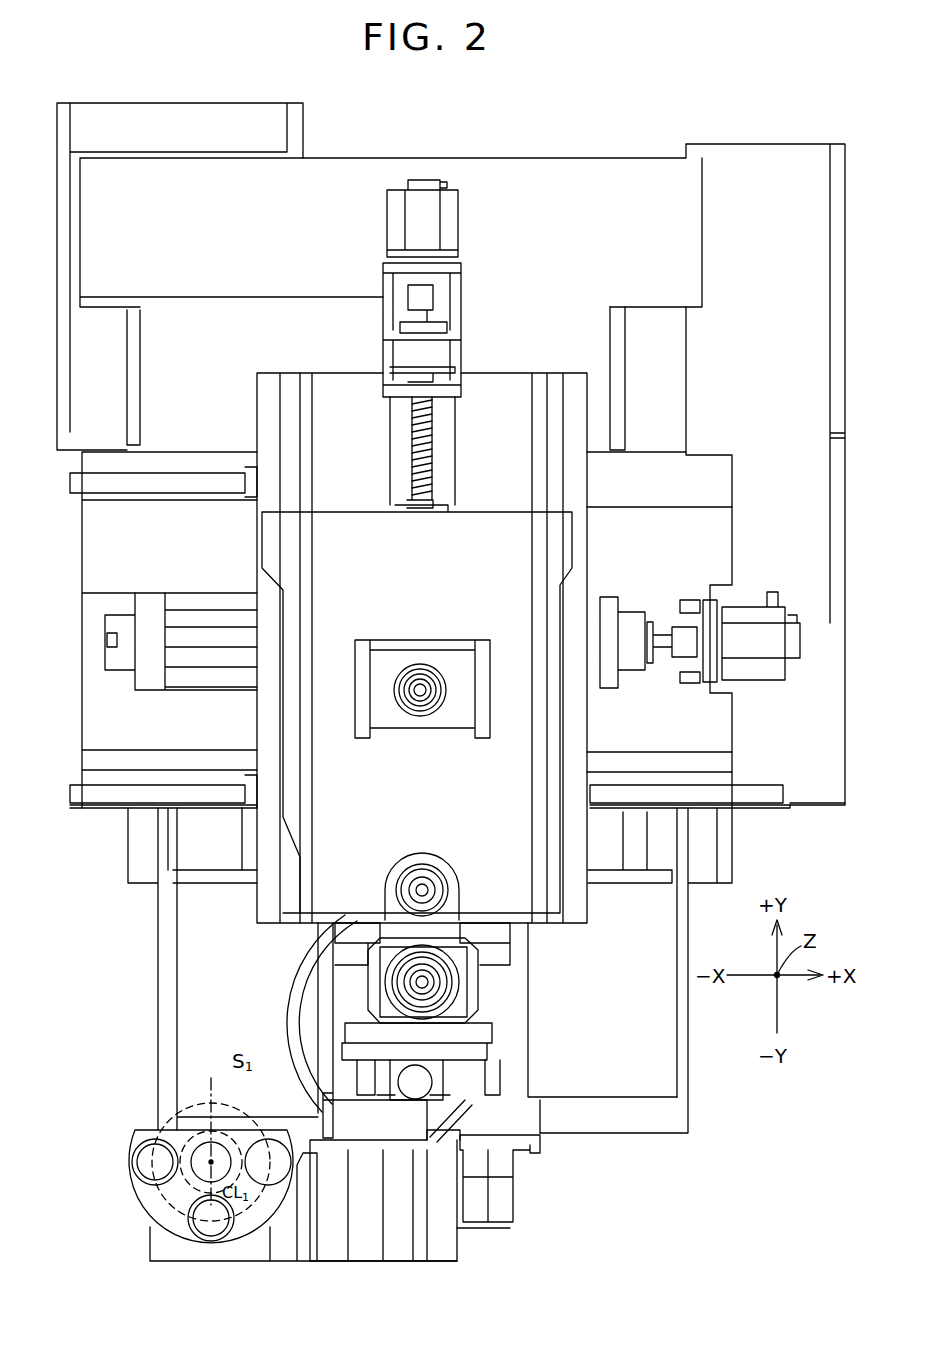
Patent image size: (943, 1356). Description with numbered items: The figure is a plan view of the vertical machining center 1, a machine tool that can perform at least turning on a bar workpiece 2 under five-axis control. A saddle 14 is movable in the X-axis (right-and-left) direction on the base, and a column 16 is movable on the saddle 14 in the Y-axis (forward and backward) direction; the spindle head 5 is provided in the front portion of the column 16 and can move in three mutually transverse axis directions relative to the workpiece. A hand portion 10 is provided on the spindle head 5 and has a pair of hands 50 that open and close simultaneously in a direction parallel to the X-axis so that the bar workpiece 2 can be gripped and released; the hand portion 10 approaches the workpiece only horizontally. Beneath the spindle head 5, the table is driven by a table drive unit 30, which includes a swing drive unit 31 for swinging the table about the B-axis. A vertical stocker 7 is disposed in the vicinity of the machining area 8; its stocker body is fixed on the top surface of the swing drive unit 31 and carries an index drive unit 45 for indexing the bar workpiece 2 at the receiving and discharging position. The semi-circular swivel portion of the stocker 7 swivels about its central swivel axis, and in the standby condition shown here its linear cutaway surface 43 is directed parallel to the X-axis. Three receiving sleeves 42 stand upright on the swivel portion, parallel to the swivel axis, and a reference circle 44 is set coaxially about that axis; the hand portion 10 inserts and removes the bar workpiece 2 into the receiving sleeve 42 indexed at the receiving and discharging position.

The vertical machining center 1 is at (728, 1155).
The bar workpiece 2 is at (143, 1161).
The spindle head 5 is at (505, 1022).
The stocker 7 is at (124, 1136).
The machining area 8 is at (572, 993).
The hand portion 10 is at (513, 1081).
The saddle 14 is at (498, 372).
The column 16 is at (478, 528).
The table drive unit 30 is at (462, 1243).
The swing drive unit 31 is at (510, 1228).
The receiving sleeve 42 is at (268, 1168).
The linear cutaway surface 43 is at (157, 1163).
The reference circle 44 is at (163, 1193).
The index drive unit 45 is at (138, 1238).
The hands 50 is at (433, 1100).